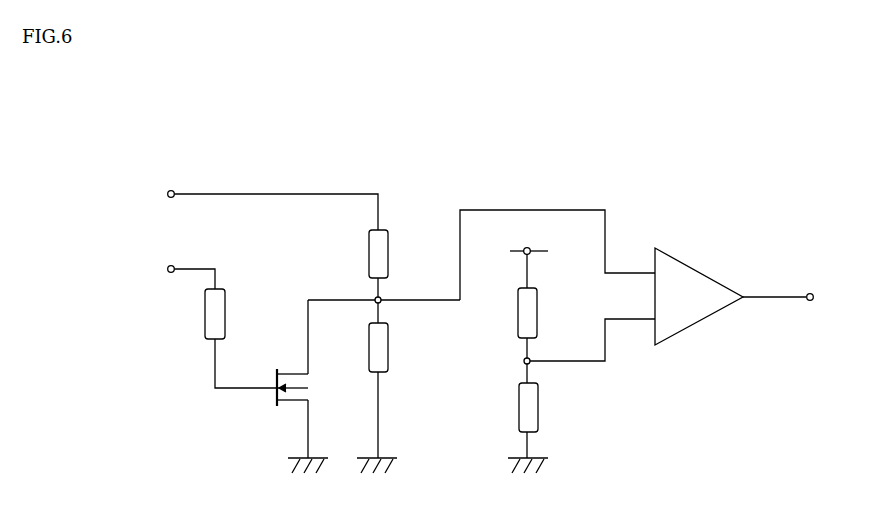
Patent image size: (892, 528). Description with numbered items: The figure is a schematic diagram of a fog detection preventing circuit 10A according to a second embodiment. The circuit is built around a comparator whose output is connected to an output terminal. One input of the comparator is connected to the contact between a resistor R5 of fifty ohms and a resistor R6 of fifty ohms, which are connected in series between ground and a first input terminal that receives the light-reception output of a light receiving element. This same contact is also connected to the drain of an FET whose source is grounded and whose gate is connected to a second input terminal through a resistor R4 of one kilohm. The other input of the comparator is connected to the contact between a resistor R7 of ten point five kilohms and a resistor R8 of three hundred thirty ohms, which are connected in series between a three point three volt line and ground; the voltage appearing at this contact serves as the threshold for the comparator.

The fog detection preventing circuit 10A is at (136, 111).
The resistor R4 is at (205, 318).
The resistor R5 is at (369, 258).
The resistor R6 is at (388, 355).
The resistor R7 is at (519, 305).
The resistor R8 is at (519, 414).
The element FET is at (273, 406).